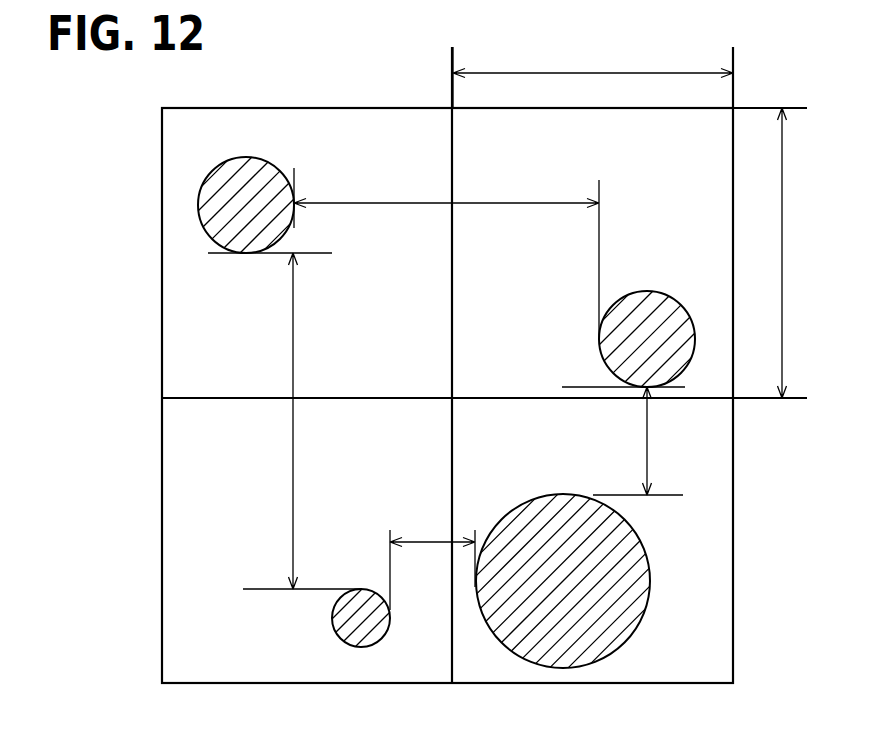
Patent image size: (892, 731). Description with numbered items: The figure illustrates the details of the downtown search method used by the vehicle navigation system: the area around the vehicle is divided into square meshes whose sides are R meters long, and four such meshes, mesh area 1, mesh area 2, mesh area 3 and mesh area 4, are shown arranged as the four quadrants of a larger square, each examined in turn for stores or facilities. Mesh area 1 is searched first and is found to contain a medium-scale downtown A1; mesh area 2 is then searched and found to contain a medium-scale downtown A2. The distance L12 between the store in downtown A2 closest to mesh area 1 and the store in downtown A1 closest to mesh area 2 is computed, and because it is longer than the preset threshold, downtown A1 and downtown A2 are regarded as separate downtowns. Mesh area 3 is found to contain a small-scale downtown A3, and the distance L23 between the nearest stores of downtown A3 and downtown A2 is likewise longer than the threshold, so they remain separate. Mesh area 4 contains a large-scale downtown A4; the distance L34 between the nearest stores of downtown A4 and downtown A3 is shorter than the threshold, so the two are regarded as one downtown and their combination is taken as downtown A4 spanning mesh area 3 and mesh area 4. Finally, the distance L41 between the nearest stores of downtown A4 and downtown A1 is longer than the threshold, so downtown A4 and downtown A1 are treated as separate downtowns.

The medium-scale downtown A1 is at (657, 291).
The medium-scale downtown A2 is at (255, 158).
The small-scale downtown A3 is at (333, 628).
The large-scale downtown A4 is at (645, 540).
The distance between downtown A1 and downtown A2 L12 is at (446, 254).
The distance between downtown A2 and downtown A3 L23 is at (285, 421).
The distance between downtown A3 and downtown A4 L34 is at (432, 558).
The distance between downtown A4 and downtown A1 L41 is at (626, 441).
The mesh side length R is at (632, 217).
The mesh area 1 is at (473, 376).
The mesh area 2 is at (424, 376).
The mesh area 3 is at (424, 426).
The mesh area 4 is at (473, 426).